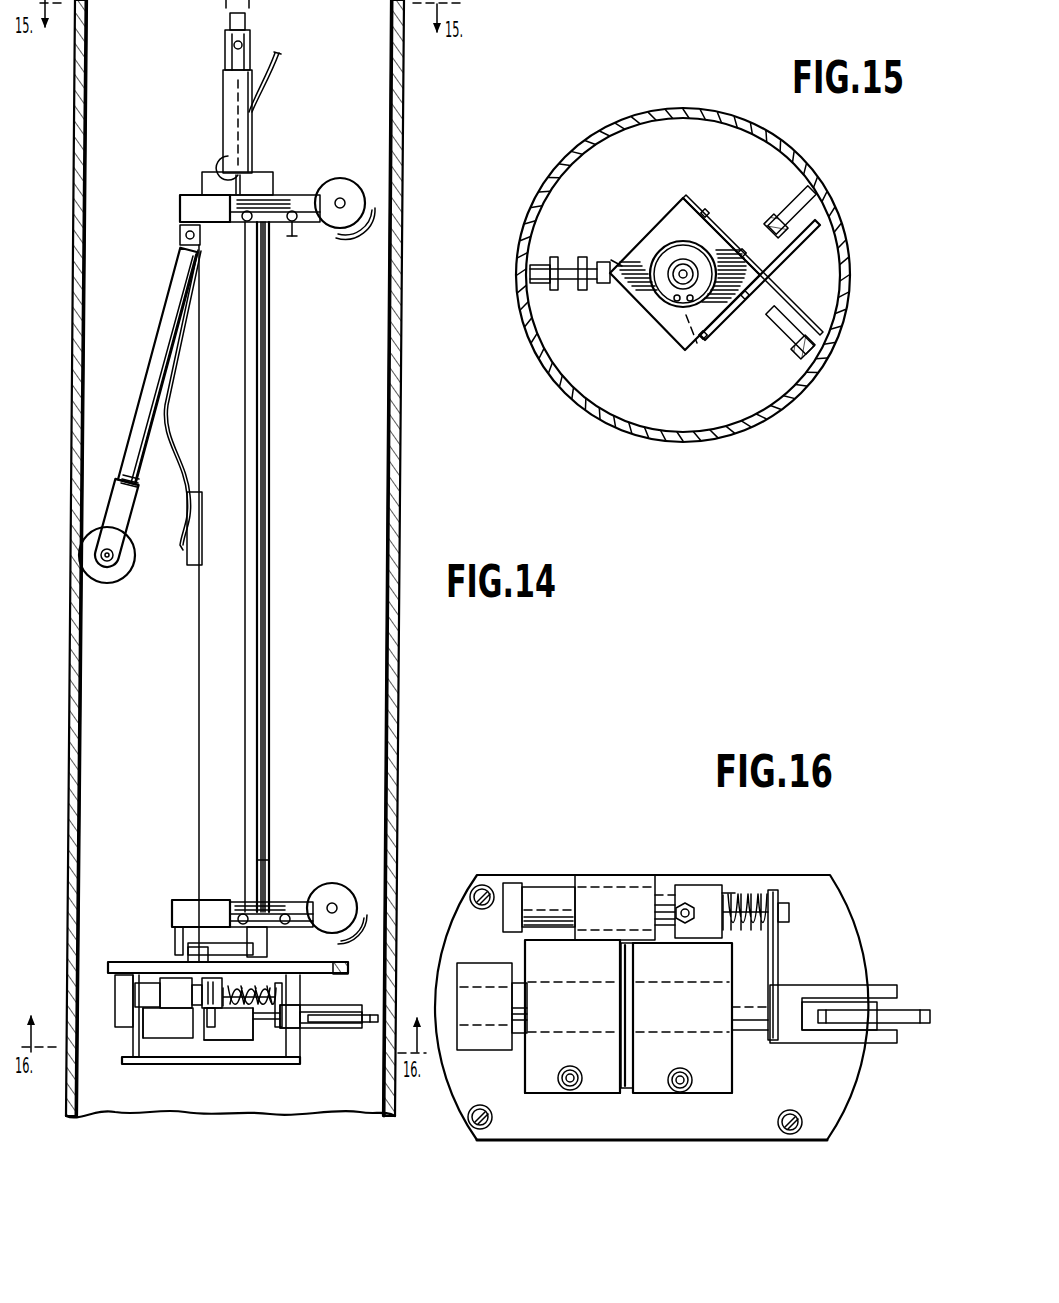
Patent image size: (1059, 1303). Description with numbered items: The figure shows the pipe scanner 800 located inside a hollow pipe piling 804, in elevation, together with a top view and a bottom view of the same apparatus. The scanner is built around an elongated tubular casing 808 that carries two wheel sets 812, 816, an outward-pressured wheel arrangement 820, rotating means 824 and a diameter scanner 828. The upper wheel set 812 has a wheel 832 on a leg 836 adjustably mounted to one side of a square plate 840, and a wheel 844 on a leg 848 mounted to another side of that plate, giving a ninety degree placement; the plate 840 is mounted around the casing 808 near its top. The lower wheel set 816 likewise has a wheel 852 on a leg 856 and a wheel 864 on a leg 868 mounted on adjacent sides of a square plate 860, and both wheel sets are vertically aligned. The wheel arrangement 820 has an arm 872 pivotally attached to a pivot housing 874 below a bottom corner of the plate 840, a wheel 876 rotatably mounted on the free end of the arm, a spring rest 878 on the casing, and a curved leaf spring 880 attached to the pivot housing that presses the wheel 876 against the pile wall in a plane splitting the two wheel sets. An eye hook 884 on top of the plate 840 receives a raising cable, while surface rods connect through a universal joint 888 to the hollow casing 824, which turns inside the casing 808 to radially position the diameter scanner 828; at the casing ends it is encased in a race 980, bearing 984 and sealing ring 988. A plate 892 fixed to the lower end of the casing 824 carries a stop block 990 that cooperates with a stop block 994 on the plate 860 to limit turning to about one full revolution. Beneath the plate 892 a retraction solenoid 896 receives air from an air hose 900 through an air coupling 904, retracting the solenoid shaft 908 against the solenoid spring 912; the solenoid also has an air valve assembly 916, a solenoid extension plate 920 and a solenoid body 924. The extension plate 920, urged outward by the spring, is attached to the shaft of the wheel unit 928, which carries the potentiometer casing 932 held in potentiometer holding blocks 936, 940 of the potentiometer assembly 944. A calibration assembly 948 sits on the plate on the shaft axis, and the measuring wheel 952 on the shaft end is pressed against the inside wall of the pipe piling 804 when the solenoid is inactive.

In FIG. 14, the pipe scanner 800 is at (271, 580).
In FIG. 14, the pipe piling 804 is at (394, 341).
In FIG. 15, the pipe piling 804 is at (848, 250).
In FIG. 14, the elongated tubular casing 808 is at (253, 473).
In FIG. 15, the elongated tubular casing 808 is at (704, 252).
In FIG. 14, the wheel set 812 is at (299, 186).
In FIG. 14, the wheel set 816 is at (308, 873).
In FIG. 14, the outward-pressured wheel arrangement 820 is at (148, 346).
In FIG. 14, the rotating means 824 is at (258, 135).
In FIG. 14, the diameter scanner 828 is at (298, 1066).
In FIG. 16, the diameter scanner 828 is at (623, 1144).
In FIG. 14, the wheel 832 is at (356, 198).
In FIG. 15, the wheel 832 is at (800, 352).
In FIG. 15, the leg 836 is at (782, 305).
In FIG. 14, the square plate 840 is at (182, 205).
In FIG. 15, the square plate 840 is at (663, 318).
In FIG. 14, the wheel 844 is at (358, 236).
In FIG. 15, the wheel 844 is at (797, 207).
In FIG. 14, the leg 848 is at (285, 224).
In FIG. 15, the leg 848 is at (723, 313).
In FIG. 14, the wheel 852 is at (351, 893).
In FIG. 14, the leg 856 is at (313, 882).
In FIG. 14, the square plate 860 is at (175, 906).
In FIG. 14, the wheel 864 is at (354, 940).
In FIG. 14, the leg 868 is at (262, 866).
In FIG. 14, the arm 872 is at (137, 424).
In FIG. 15, the arm 872 is at (580, 285).
In FIG. 14, the pivot housing 874 is at (178, 234).
In FIG. 14, the wheel 876 is at (84, 549).
In FIG. 15, the wheel 876 is at (540, 263).
In FIG. 14, the spring rest 878 is at (188, 554).
In FIG. 14, the curved leaf spring 880 is at (168, 486).
In FIG. 15, the curved leaf spring 880 is at (627, 222).
In FIG. 14, the eye hook 884 is at (227, 157).
In FIG. 14, the universal joint 888 is at (250, 33).
In FIG. 14, the plate 892 is at (143, 962).
In FIG. 16, the plate 892 is at (507, 1122).
In FIG. 14, the retraction solenoid 896 is at (168, 1028).
In FIG. 16, the retraction solenoid 896 is at (619, 873).
In FIG. 14, the air hose 900 is at (279, 62).
In FIG. 15, the air hose 900 is at (684, 266).
In FIG. 14, the air coupling 904 is at (200, 993).
In FIG. 16, the air coupling 904 is at (692, 890).
In FIG. 14, the solenoid shaft 908 is at (258, 1034).
In FIG. 16, the solenoid shaft 908 is at (740, 892).
In FIG. 14, the solenoid spring 912 is at (259, 990).
In FIG. 16, the solenoid spring 912 is at (730, 890).
In FIG. 14, the air valve assembly 916 is at (140, 995).
In FIG. 16, the air valve assembly 916 is at (535, 892).
In FIG. 14, the solenoid extension plate 920 is at (283, 1018).
In FIG. 16, the solenoid extension plate 920 is at (779, 903).
In FIG. 14, the solenoid body 924 is at (165, 1005).
In FIG. 16, the solenoid body 924 is at (583, 885).
In FIG. 14, the wheel unit 928 is at (258, 1043).
In FIG. 16, the wheel unit 928 is at (750, 1090).
In FIG. 14, the potentiometer casing 932 is at (280, 1030).
In FIG. 16, the potentiometer casing 932 is at (747, 1040).
In FIG. 14, the potentiometer holding block 936 is at (246, 1043).
In FIG. 16, the potentiometer holding block 936 is at (640, 1082).
In FIG. 14, the potentiometer holding block 940 is at (178, 1033).
In FIG. 16, the potentiometer holding block 940 is at (548, 1082).
In FIG. 14, the potentiometer assembly 944 is at (216, 1043).
In FIG. 16, the potentiometer assembly 944 is at (590, 1098).
In FIG. 14, the calibration assembly 948 is at (114, 990).
In FIG. 16, the calibration assembly 948 is at (493, 1047).
In FIG. 14, the measuring wheel 952 is at (366, 1016).
In FIG. 16, the measuring wheel 952 is at (905, 1017).
In FIG. 15, the race 980 is at (667, 266).
In FIG. 15, the bearing 984 is at (670, 285).
In FIG. 15, the sealing ring 988 is at (695, 308).
In FIG. 14, the stop block 990 is at (199, 893).
In FIG. 14, the stop block 994 is at (190, 945).